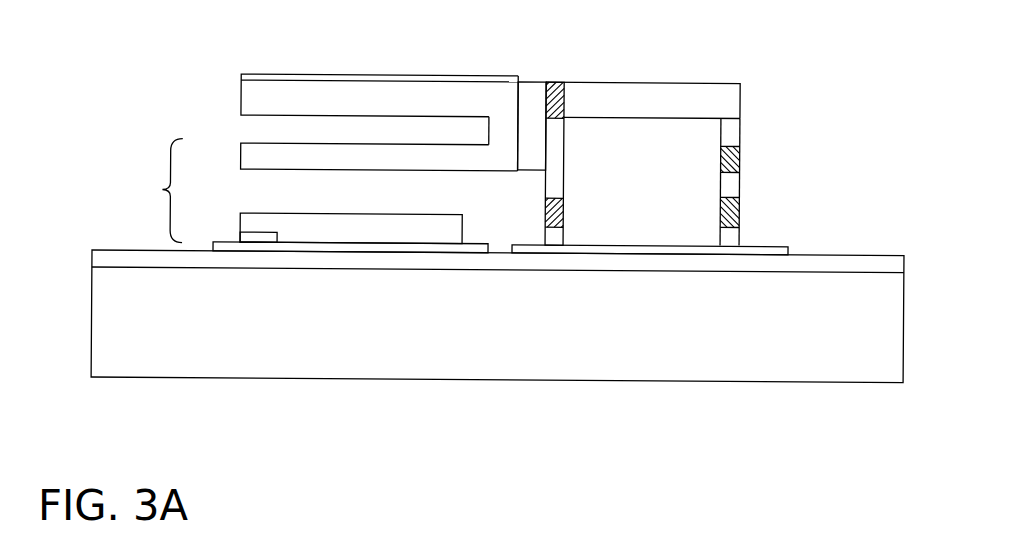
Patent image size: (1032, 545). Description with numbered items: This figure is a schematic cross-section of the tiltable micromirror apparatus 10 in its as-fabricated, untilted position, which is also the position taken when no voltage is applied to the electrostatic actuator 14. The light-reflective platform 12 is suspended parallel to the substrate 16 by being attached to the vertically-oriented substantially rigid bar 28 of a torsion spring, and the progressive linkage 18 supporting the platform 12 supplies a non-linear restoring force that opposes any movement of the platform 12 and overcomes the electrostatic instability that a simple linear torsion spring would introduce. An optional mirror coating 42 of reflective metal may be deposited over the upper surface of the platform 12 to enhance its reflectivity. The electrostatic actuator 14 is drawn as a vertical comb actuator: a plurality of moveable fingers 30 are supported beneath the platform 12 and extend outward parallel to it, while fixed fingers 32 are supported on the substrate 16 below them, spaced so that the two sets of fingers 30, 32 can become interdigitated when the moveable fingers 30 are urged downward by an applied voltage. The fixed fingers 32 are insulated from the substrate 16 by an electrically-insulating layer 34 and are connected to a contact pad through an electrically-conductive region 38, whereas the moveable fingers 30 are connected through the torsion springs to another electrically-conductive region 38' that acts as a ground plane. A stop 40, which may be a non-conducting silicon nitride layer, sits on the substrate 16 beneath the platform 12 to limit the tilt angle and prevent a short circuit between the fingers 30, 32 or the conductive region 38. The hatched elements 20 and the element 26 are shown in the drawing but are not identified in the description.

The tiltable micromirror apparatus 10 is at (789, 400).
The light-reflective platform 12 is at (240, 96).
The electrostatic actuator 14 is at (317, 132).
The substrate 16 is at (130, 339).
The progressive linkage 18 is at (697, 53).
The insulating layers 20 is at (554, 79).
The top cap member 26 is at (631, 79).
The substantially rigid bar 28 is at (720, 181).
The moveable fingers 30 is at (240, 155).
The fixed fingers 32 is at (240, 221).
The electrically-insulating layer 34 is at (92, 258).
The electrically-conductive region 38 is at (356, 224).
The electrically-conductive region 38' is at (655, 225).
The stop 40 is at (277, 231).
The mirror coating 42 is at (296, 73).